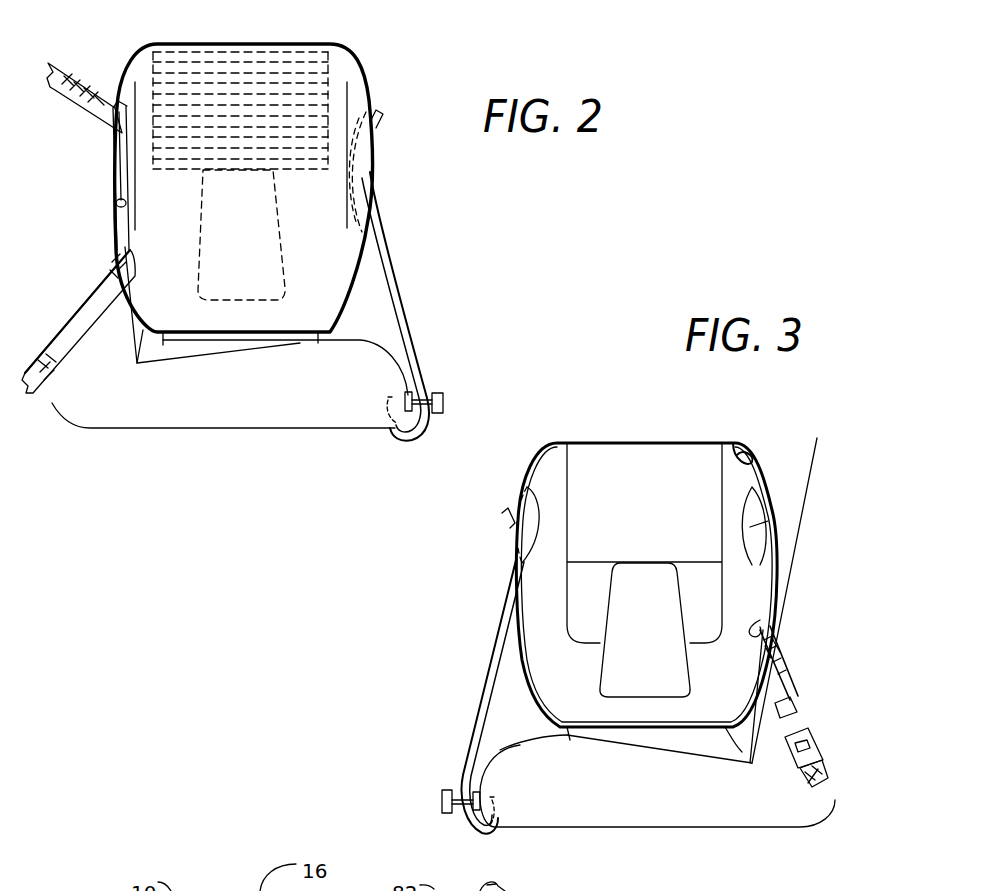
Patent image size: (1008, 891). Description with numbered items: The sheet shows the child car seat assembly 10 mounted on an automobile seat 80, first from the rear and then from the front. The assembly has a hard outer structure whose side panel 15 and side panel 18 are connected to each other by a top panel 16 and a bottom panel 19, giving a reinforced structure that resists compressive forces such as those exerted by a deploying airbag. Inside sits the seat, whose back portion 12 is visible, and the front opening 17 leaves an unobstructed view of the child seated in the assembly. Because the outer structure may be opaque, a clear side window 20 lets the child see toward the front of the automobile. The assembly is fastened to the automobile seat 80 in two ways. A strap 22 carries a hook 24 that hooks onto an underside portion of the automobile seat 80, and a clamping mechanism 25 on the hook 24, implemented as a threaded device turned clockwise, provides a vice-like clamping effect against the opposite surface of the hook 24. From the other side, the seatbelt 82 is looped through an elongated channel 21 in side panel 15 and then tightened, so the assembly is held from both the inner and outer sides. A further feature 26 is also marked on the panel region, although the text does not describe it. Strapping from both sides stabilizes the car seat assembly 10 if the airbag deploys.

In FIG. 2, the child car seat assembly 10 is at (144, 55).
In FIG. 2, the back portion 12 is at (283, 247).
In FIG. 3, the back portion 12 is at (655, 675).
In FIG. 2, the side panel 15 is at (123, 75).
In FIG. 3, the side panel 15 is at (733, 443).
In FIG. 2, the top panel 16 is at (263, 62).
In FIG. 3, the top panel 16 is at (598, 443).
In FIG. 3, the front opening 17 is at (553, 658).
In FIG. 2, the side panel 18 is at (362, 82).
In FIG. 3, the side panel 18 is at (547, 445).
In FIG. 2, the bottom panel 19 is at (143, 330).
In FIG. 3, the bottom panel 19 is at (762, 630).
In FIG. 3, the clear side window 20 is at (523, 500).
In FIG. 2, the elongated channel 21 is at (117, 203).
In FIG. 3, the elongated channel 21 is at (760, 620).
In FIG. 2, the strap 22 is at (410, 325).
In FIG. 3, the strap 22 is at (480, 718).
In FIG. 2, the hook 24 is at (403, 440).
In FIG. 3, the hook 24 is at (468, 830).
In FIG. 2, the clamping mechanism 25 is at (447, 400).
In FIG. 3, the clamping mechanism 25 is at (440, 797).
In FIG. 2, the strap slot 26 is at (372, 167).
In FIG. 2, the automobile seat 80 is at (210, 413).
In FIG. 3, the automobile seat 80 is at (815, 440).
In FIG. 2, the seatbelt 82 is at (62, 95).
In FIG. 3, the seatbelt 82 is at (780, 677).